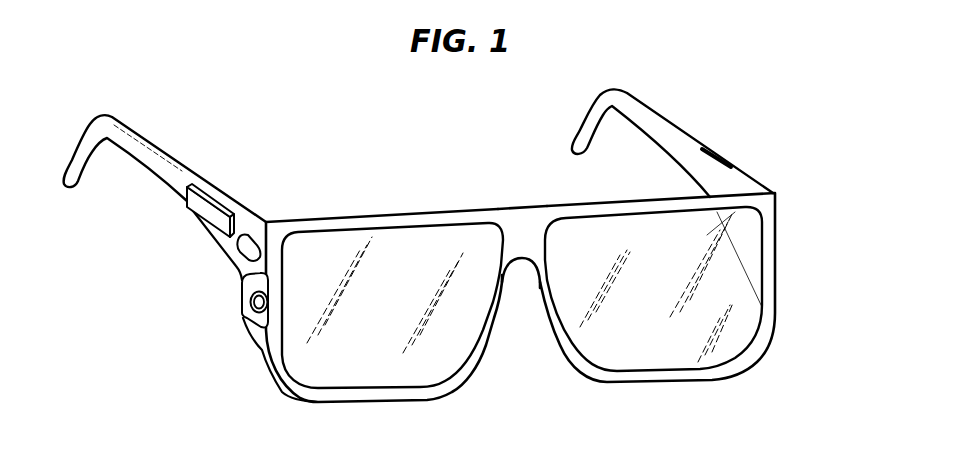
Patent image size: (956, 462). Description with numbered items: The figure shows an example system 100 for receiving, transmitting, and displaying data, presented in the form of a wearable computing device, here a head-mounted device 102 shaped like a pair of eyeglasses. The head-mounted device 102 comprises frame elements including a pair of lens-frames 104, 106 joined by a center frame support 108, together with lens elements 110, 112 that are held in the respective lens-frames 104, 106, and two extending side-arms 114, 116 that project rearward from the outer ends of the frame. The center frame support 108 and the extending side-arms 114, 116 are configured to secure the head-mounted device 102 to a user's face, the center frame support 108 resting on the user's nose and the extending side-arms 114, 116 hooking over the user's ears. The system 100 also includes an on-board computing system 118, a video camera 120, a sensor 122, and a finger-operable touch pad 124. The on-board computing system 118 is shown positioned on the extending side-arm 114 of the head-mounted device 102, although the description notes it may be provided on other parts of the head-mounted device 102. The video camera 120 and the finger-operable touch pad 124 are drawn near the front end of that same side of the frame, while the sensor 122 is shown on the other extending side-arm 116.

The system 100 is at (757, 396).
The head-mounted device 102 is at (374, 140).
The lens-frame 104 is at (343, 217).
The lens-frame 106 is at (613, 203).
The center frame support 108 is at (518, 219).
The lens element 110 is at (322, 378).
The lens element 112 is at (628, 362).
The extending side-arm 114 is at (213, 186).
The extending side-arm 116 is at (649, 109).
The on-board computing system 118 is at (197, 215).
The video camera 120 is at (242, 308).
The sensor 122 is at (723, 157).
The finger-operable touch pad 124 is at (243, 240).